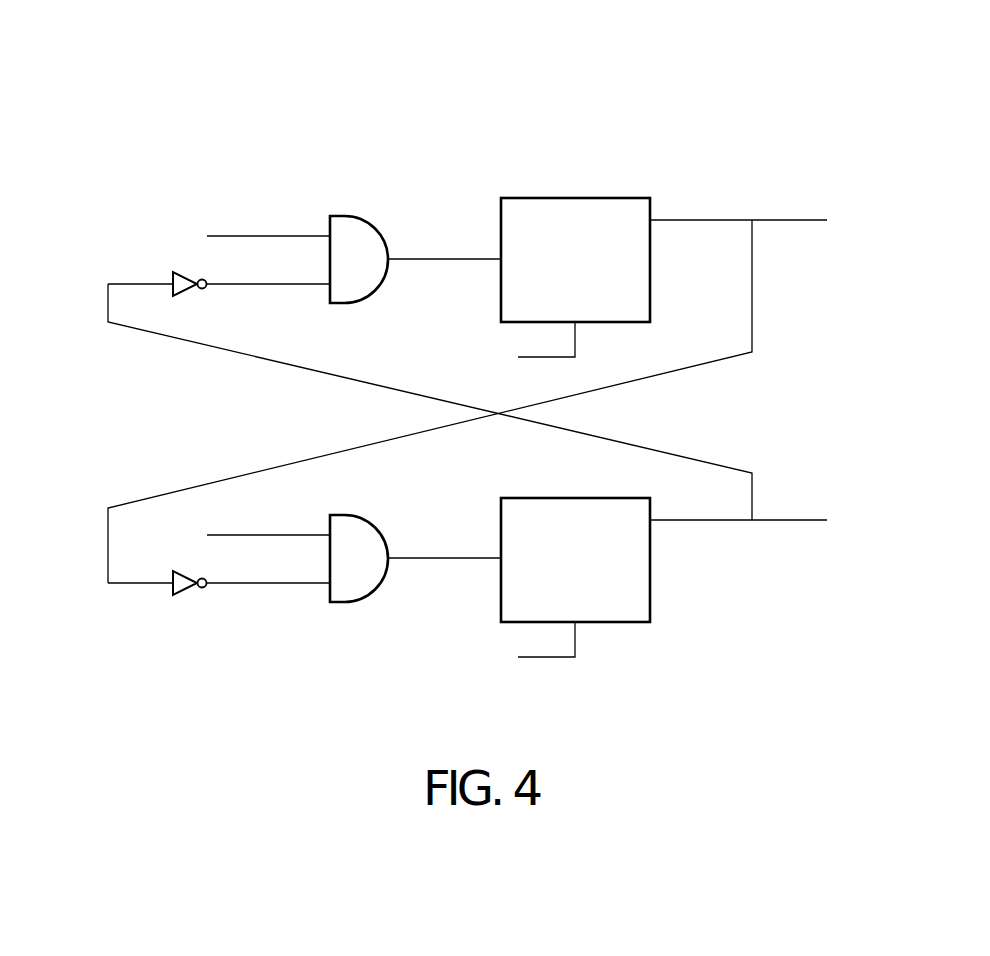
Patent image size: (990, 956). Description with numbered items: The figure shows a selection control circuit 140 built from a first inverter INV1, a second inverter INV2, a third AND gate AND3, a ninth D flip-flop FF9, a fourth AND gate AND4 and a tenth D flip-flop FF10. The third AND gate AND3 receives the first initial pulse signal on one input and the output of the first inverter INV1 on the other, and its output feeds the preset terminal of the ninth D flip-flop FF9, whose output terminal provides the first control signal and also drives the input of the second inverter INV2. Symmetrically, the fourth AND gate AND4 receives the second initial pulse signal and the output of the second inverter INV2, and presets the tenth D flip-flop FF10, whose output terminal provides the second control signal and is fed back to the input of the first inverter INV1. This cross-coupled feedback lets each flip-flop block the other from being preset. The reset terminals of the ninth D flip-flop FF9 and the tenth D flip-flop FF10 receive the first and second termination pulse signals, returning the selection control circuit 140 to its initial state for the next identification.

The selection control circuit 140 is at (803, 105).
The third AND gate AND3 is at (385, 202).
The fourth AND gate AND4 is at (385, 500).
The first inverter INV1 is at (187, 295).
The second inverter INV2 is at (187, 594).
The ninth D flip-flop FF9 is at (556, 197).
The tenth D flip-flop FF10 is at (556, 497).